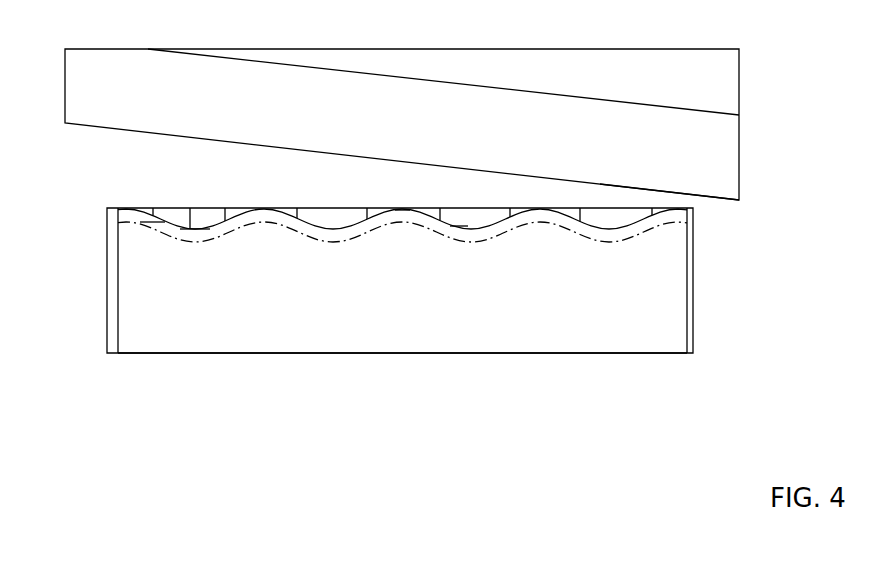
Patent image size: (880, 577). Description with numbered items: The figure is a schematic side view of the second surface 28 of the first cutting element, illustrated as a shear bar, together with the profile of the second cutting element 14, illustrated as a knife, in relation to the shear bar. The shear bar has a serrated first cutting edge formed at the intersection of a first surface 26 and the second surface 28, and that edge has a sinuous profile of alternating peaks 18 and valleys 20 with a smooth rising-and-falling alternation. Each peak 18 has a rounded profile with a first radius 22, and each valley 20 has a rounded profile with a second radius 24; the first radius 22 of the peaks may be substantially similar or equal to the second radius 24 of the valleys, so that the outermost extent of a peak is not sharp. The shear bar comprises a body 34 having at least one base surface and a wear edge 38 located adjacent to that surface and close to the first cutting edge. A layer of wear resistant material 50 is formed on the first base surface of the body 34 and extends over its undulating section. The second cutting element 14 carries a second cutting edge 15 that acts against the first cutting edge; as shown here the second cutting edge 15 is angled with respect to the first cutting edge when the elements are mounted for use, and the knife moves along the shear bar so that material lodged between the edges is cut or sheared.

The second cutting element 14 is at (667, 122).
The second cutting edge 15 is at (692, 193).
The peaks 18 is at (262, 208).
The valley 20 is at (188, 230).
The first radius 22 is at (422, 213).
The second radius 24 is at (459, 224).
The first surface 26 is at (316, 210).
The second surface 28 is at (492, 332).
The body 34 is at (352, 332).
The wear edge 38 is at (242, 223).
The layer of wear resistant material 50 is at (152, 218).